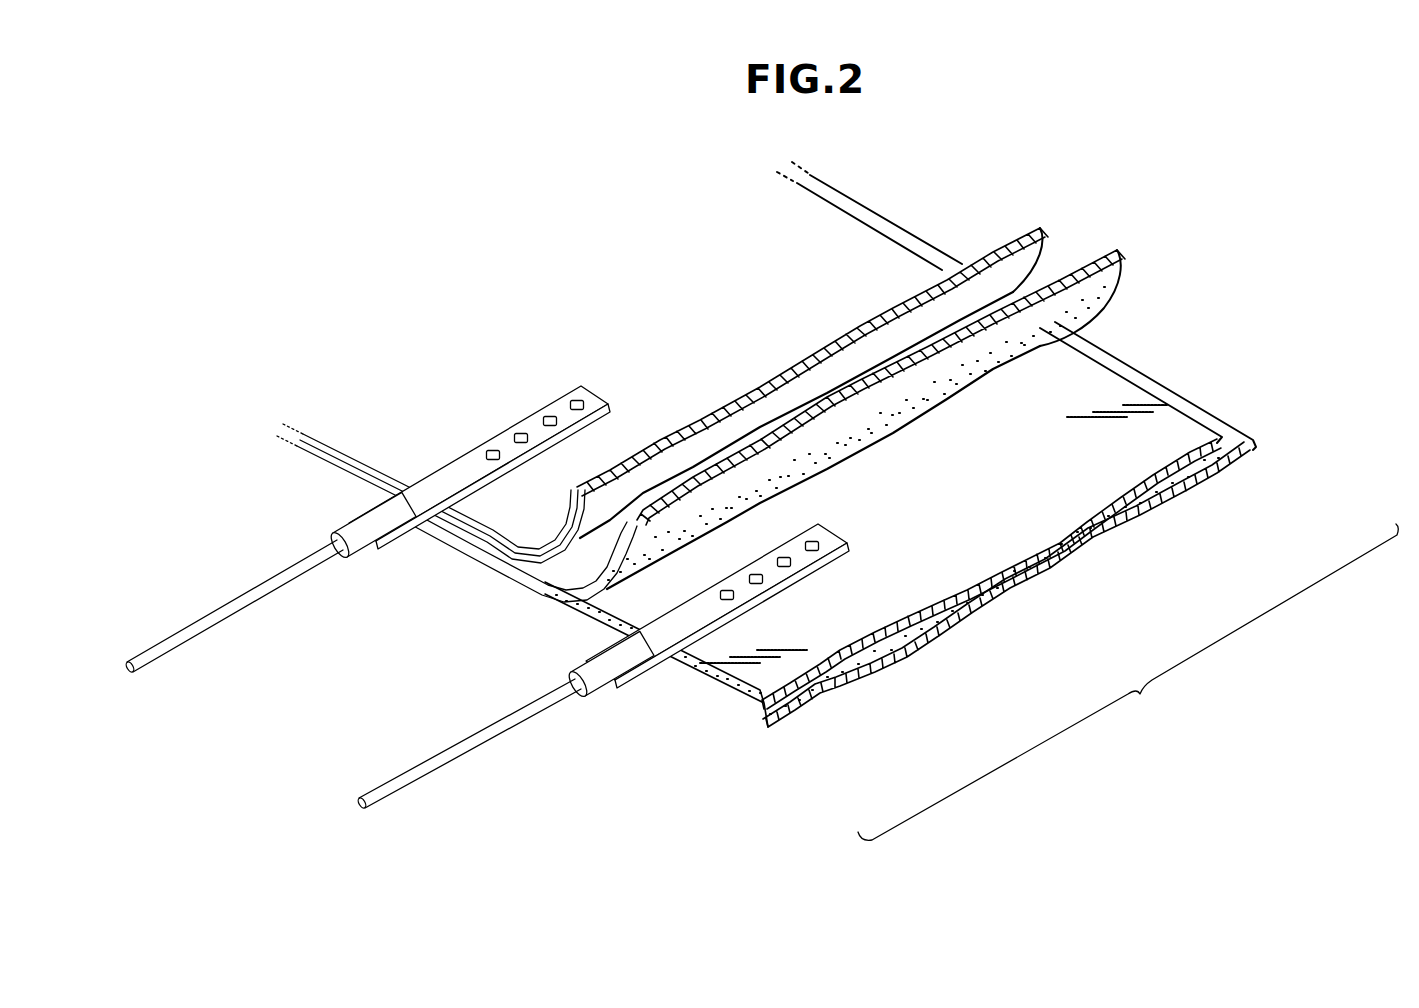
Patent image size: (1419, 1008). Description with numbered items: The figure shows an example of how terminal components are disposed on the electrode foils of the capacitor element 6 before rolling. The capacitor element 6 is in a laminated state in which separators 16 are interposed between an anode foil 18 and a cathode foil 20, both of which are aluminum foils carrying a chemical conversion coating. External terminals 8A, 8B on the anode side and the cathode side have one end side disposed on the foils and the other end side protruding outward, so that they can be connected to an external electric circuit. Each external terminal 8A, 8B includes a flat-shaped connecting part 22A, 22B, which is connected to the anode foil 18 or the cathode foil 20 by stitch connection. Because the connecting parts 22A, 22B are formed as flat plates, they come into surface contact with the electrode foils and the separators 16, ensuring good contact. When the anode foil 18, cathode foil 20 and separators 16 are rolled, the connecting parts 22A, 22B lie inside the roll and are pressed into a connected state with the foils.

The capacitor element 6 is at (1128, 682).
The external terminal 8A is at (603, 690).
The external terminal 8B is at (367, 537).
The separator 16 is at (1120, 268).
The anode foil 18 is at (1167, 427).
The cathode foil 20 is at (1008, 240).
The connecting part 22A is at (700, 610).
The connecting part 22B is at (460, 459).